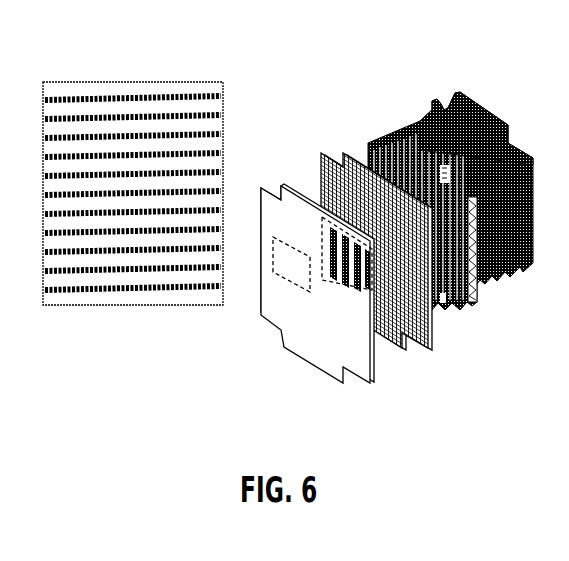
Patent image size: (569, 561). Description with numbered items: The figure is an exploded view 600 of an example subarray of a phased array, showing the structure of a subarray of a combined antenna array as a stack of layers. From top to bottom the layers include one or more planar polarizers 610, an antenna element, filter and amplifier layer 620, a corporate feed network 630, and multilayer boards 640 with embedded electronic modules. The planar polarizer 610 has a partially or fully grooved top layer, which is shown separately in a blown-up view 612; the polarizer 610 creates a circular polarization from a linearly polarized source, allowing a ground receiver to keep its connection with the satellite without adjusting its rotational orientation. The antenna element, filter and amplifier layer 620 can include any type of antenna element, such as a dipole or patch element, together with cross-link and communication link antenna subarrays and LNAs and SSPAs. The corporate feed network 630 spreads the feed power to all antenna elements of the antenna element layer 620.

The exploded view 600 is at (116, 40).
The planar polarizer 610 is at (277, 345).
The blown-up view 612 is at (296, 289).
The antenna element, filter and amplifier layer 620 is at (314, 151).
The corporate feed network 630 is at (470, 326).
The multilayer boards 640 is at (423, 116).